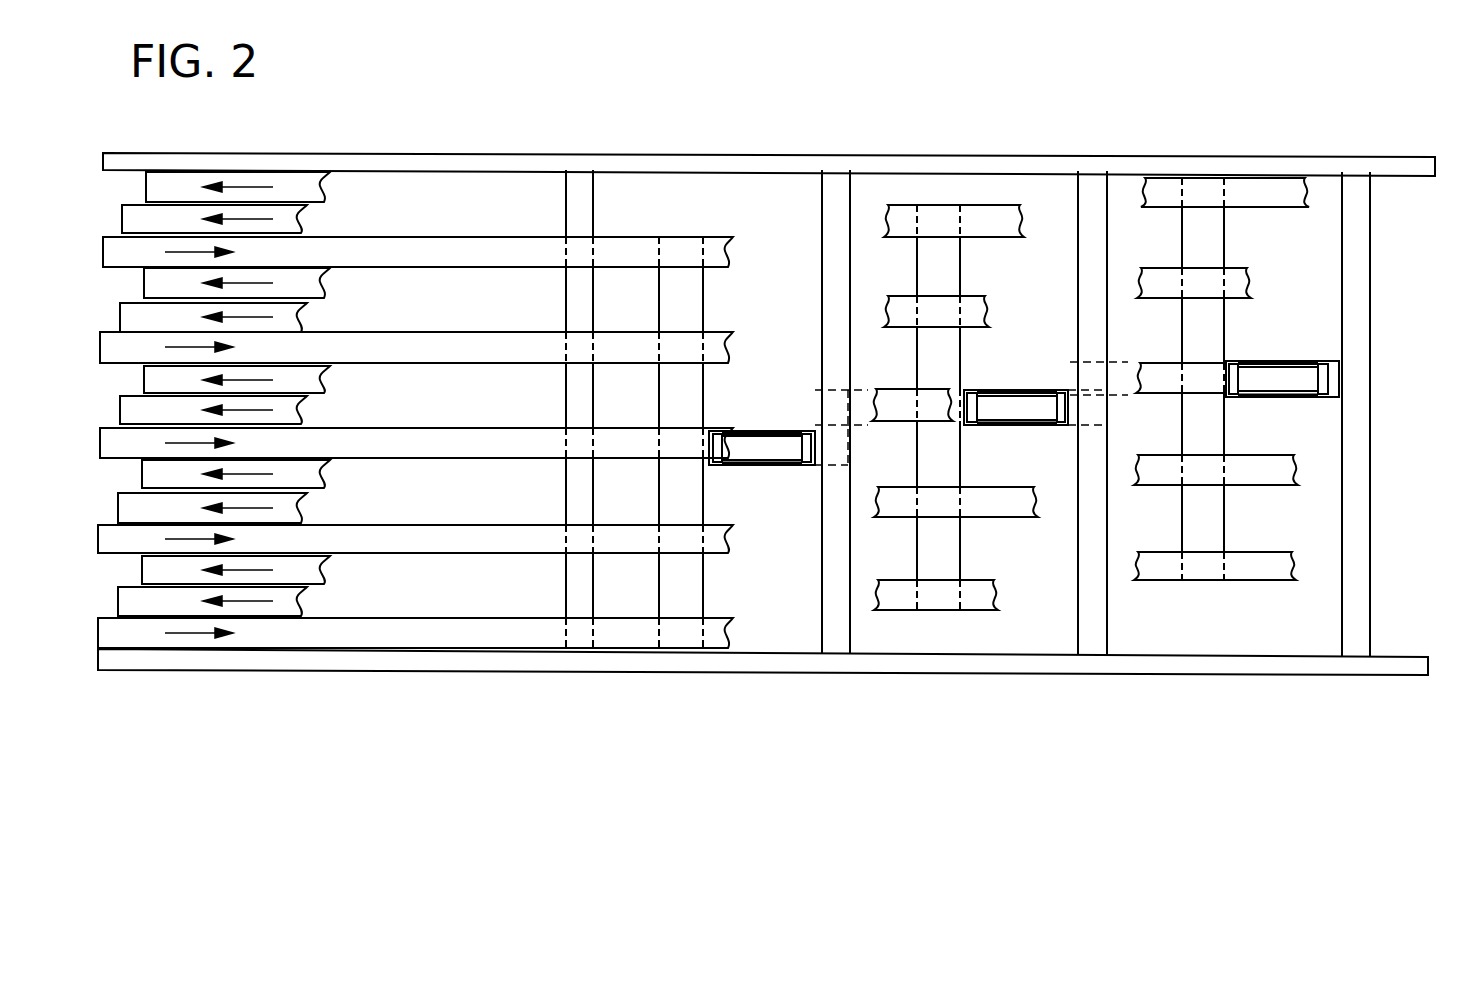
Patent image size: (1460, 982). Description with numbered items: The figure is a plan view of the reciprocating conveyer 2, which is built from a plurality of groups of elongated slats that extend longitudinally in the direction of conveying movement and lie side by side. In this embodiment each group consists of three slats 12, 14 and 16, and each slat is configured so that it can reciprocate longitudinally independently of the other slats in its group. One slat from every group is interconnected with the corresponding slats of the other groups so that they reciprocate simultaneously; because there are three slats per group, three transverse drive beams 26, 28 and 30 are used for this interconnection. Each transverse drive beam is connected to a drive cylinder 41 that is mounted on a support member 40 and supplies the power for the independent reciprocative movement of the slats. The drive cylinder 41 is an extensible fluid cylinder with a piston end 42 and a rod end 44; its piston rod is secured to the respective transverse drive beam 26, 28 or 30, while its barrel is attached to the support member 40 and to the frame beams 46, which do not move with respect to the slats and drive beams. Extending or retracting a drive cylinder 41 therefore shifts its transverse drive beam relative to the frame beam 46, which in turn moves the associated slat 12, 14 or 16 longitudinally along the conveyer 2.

The reciprocating conveyer 2 is at (770, 118).
The slat 12 is at (103, 248).
The slat 14 is at (122, 214).
The slat 16 is at (146, 180).
The transverse drive beam 26 is at (703, 590).
The transverse drive beam 28 is at (945, 540).
The transverse drive beam 30 is at (1212, 512).
The support member 40 is at (757, 466).
The drive cylinder 41 is at (770, 466).
The piston end 42 is at (800, 431).
The rod end 44 is at (722, 436).
The frame beam 46 is at (835, 624).